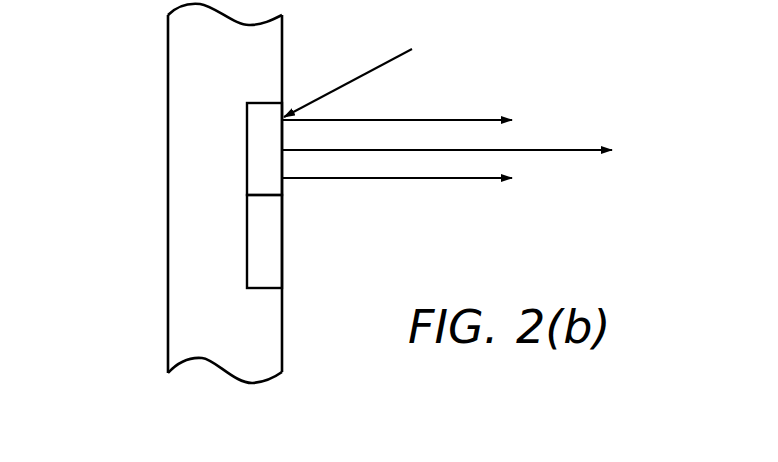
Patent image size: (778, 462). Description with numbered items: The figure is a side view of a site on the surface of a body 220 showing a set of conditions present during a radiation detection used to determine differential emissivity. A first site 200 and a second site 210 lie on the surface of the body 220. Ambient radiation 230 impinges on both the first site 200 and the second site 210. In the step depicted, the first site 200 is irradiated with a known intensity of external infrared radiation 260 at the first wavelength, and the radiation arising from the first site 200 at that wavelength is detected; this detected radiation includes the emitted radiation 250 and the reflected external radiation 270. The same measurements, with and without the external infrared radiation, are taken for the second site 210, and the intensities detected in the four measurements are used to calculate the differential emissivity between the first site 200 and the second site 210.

The first site 200 is at (253, 147).
The second site 210 is at (253, 240).
The body 220 is at (233, 65).
The ambient radiation 230 is at (284, 178).
The emitted radiation 250 is at (472, 150).
The external infrared radiation 260 is at (372, 77).
The reflected external radiation 270 is at (422, 120).